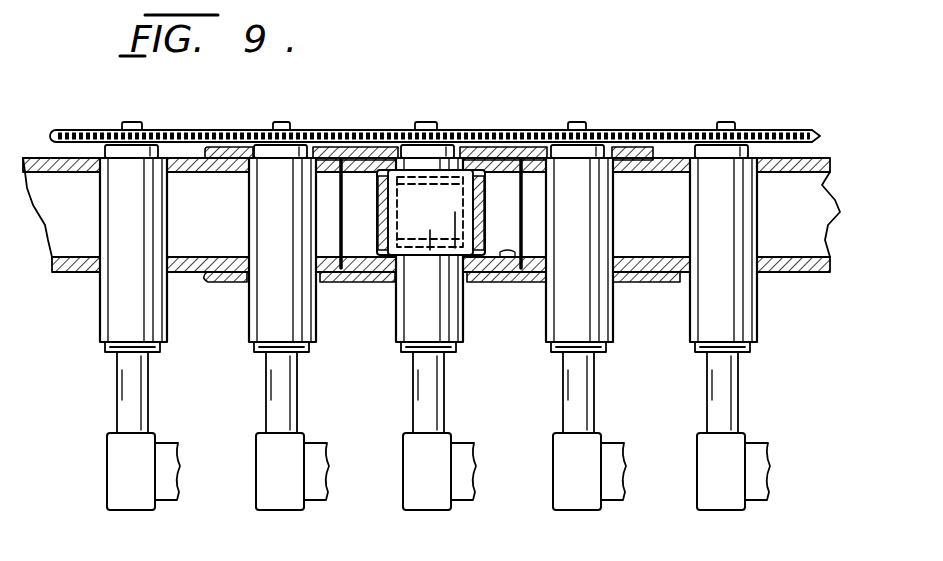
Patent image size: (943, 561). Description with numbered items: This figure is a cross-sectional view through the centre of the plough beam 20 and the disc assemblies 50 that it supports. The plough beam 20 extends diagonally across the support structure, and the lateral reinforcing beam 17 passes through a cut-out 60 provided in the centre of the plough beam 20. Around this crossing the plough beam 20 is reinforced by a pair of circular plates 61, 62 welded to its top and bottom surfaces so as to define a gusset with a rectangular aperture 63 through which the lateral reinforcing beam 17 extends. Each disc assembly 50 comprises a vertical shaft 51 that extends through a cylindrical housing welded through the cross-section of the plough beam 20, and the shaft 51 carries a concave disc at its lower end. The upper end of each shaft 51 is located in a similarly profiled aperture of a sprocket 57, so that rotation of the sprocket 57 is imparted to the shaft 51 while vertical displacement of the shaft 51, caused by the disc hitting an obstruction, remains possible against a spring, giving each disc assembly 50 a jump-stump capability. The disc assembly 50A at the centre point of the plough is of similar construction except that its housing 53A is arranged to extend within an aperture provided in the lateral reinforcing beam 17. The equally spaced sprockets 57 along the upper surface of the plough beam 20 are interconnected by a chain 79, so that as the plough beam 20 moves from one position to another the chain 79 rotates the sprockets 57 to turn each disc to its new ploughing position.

The lateral reinforcing beam 17 is at (482, 180).
The plough beam 20 is at (795, 253).
The disc assembly 50 is at (98, 309).
The disc assembly at the centre point of the plough 50A is at (401, 361).
The vertical shaft 51 is at (278, 398).
The housing of the central disc assembly 53A is at (430, 232).
The sprocket 57 is at (752, 129).
The cut-out 60 is at (508, 259).
The circular plate 61 is at (235, 283).
The circular plate 62 is at (374, 168).
The rectangular aperture 63 is at (364, 224).
The chain 79 is at (659, 130).